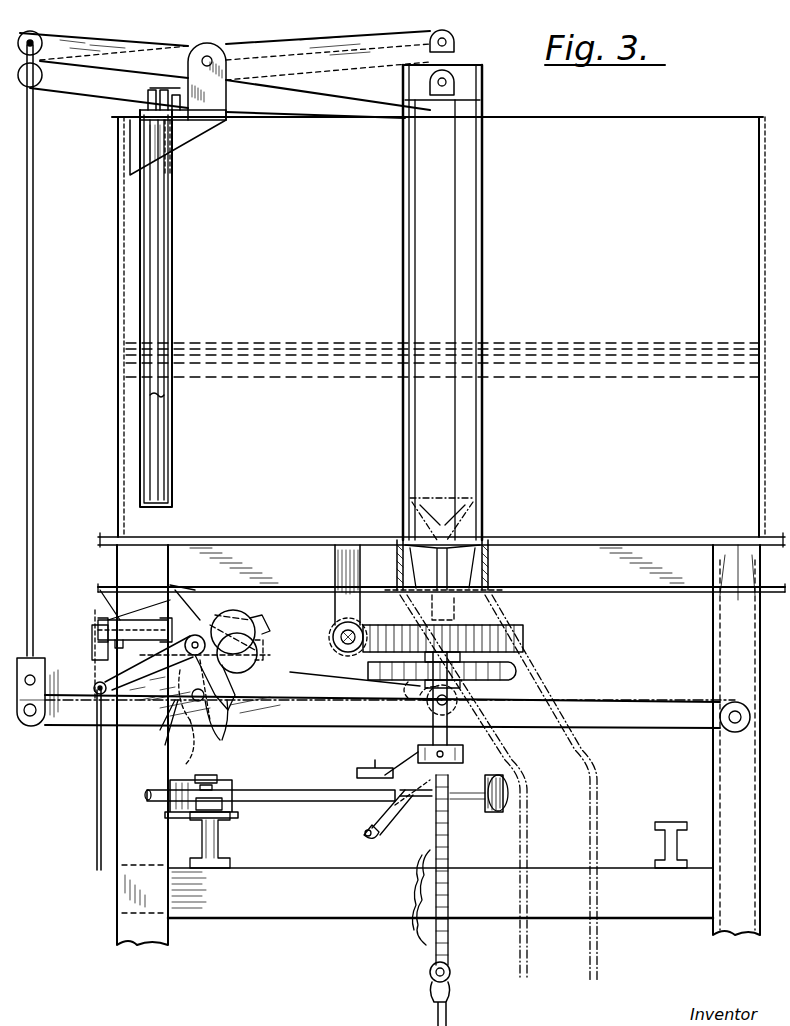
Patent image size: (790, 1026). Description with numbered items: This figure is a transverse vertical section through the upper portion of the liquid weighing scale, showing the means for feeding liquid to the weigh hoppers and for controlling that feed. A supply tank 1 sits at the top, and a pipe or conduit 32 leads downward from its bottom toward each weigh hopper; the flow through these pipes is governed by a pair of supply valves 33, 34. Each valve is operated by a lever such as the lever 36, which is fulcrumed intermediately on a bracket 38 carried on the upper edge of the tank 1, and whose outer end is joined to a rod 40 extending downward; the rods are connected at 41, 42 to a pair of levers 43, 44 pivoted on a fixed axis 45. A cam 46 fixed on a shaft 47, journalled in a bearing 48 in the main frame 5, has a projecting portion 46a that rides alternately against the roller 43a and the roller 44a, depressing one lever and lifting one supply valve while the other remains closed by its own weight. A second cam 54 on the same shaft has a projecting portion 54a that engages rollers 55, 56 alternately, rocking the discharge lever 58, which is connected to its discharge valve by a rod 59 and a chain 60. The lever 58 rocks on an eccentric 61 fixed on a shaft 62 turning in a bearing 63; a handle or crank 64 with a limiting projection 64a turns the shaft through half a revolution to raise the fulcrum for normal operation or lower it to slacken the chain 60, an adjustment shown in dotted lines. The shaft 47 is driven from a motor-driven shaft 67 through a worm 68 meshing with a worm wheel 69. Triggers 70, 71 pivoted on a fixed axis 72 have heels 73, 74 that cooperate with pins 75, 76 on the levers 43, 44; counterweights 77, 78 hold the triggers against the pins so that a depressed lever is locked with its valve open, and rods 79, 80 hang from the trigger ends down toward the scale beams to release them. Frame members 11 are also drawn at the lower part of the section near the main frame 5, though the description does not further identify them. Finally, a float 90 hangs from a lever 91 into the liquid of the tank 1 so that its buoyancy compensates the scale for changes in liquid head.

The tank 1 is at (772, 142).
The main frame 5 is at (241, 911).
The rail 11 is at (220, 838).
The pipe or conduit 32 is at (520, 630).
The supply valve 33 is at (482, 74).
The supply valve 34 is at (482, 236).
The lever 36 is at (72, 35).
The bracket 38 is at (228, 101).
The rod 40 is at (35, 360).
The connection 41 is at (23, 726).
The connection 42 is at (95, 640).
The lever 43 is at (280, 738).
The roller 43a is at (468, 725).
The lever 44 is at (295, 675).
The roller 44a is at (415, 694).
The fixed axis 45 is at (725, 725).
The cam 46 is at (515, 668).
The projecting portion of the cam 46a is at (405, 688).
The shaft 47 is at (430, 745).
The bearing 48 is at (495, 605).
The cam 54 is at (510, 760).
The projecting portion of the cam 54a is at (375, 808).
The roller 55 is at (62, 92).
The roller 56 is at (365, 842).
The lever 58 is at (402, 840).
The rod 59 is at (452, 1015).
The chain 60 is at (450, 862).
The eccentric 61 is at (380, 773).
The shaft 62 is at (282, 792).
The bearing 63 is at (233, 806).
The handle or crank 64 is at (155, 803).
The projection 64a is at (200, 783).
The shaft 67 is at (340, 642).
The worm 68 is at (335, 632).
The worm wheel 69 is at (388, 636).
The trigger 70 is at (180, 702).
The trigger 71 is at (220, 730).
The fixed axis 72 is at (197, 634).
The heel 73 is at (177, 734).
The heel 74 is at (222, 690).
The pin 75 is at (182, 762).
The pin 76 is at (158, 728).
The counterweight 77 is at (270, 690).
The counterweight 78 is at (238, 608).
The rod 79 is at (86, 645).
The rod 80 is at (94, 812).
The float 90 is at (175, 270).
The lever 91 is at (172, 152).